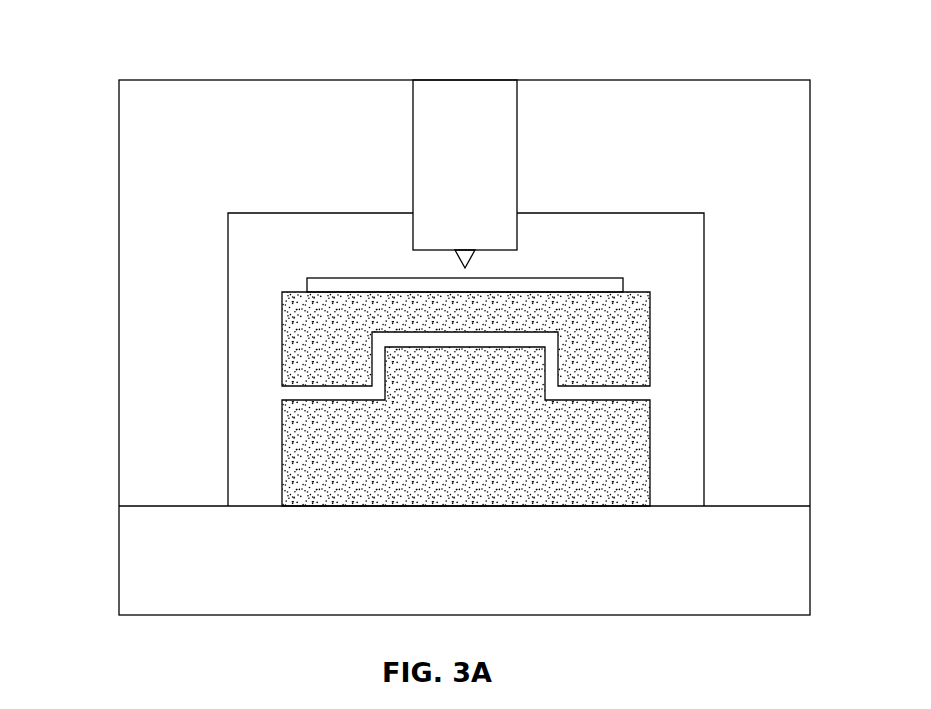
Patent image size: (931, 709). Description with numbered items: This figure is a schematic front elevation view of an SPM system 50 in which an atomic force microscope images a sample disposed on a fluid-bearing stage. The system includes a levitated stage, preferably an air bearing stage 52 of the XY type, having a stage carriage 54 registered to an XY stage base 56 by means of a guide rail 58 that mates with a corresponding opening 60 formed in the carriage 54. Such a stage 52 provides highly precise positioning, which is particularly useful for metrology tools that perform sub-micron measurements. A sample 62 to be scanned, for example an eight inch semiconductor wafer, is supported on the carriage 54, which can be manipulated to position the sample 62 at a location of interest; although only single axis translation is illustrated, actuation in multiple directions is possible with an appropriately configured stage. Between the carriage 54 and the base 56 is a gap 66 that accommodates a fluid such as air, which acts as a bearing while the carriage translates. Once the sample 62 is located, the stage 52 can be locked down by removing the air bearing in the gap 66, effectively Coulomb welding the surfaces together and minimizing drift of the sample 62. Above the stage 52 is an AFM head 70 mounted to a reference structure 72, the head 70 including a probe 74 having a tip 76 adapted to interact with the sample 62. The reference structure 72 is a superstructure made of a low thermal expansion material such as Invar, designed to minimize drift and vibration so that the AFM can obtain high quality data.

The SPM system 50 is at (126, 52).
The air bearing stage 52 is at (575, 242).
The stage carriage 54 is at (650, 357).
The XY stage base 56 is at (650, 452).
The guide rail 58 is at (548, 385).
The opening 60 is at (546, 340).
The sample 62 is at (337, 278).
The gap 66 is at (270, 393).
The AFM head 70 is at (433, 168).
The reference structure 72 is at (272, 98).
The probe 74 is at (436, 265).
The tip 76 is at (473, 258).